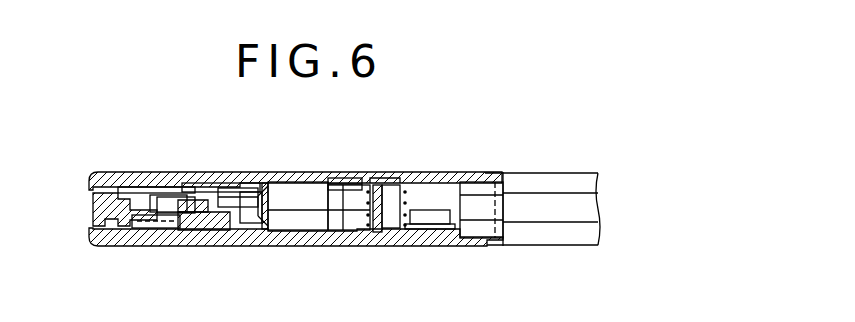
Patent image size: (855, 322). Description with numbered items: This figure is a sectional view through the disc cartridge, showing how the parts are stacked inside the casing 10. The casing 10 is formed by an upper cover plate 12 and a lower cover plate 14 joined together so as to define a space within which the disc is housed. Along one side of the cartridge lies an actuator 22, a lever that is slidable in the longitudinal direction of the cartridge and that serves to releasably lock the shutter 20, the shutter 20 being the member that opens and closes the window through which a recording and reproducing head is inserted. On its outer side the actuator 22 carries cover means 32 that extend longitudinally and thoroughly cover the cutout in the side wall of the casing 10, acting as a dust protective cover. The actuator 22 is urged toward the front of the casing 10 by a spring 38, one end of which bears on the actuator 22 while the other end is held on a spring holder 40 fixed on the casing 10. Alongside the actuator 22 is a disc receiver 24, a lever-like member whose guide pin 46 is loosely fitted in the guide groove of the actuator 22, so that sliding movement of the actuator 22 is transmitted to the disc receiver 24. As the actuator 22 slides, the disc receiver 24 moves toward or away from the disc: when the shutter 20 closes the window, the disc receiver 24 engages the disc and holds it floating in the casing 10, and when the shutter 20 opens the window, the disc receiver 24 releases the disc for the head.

The casing 10 is at (105, 122).
The upper cover plate 12 is at (258, 183).
The lower cover plate 14 is at (288, 246).
The shutter 20 is at (541, 172).
The actuator 22 is at (140, 187).
The disc receiver 24 is at (200, 246).
The cover means 32 is at (93, 211).
The spring 38 is at (343, 178).
The spring holder 40 is at (409, 190).
The guide pin 46 is at (196, 185).